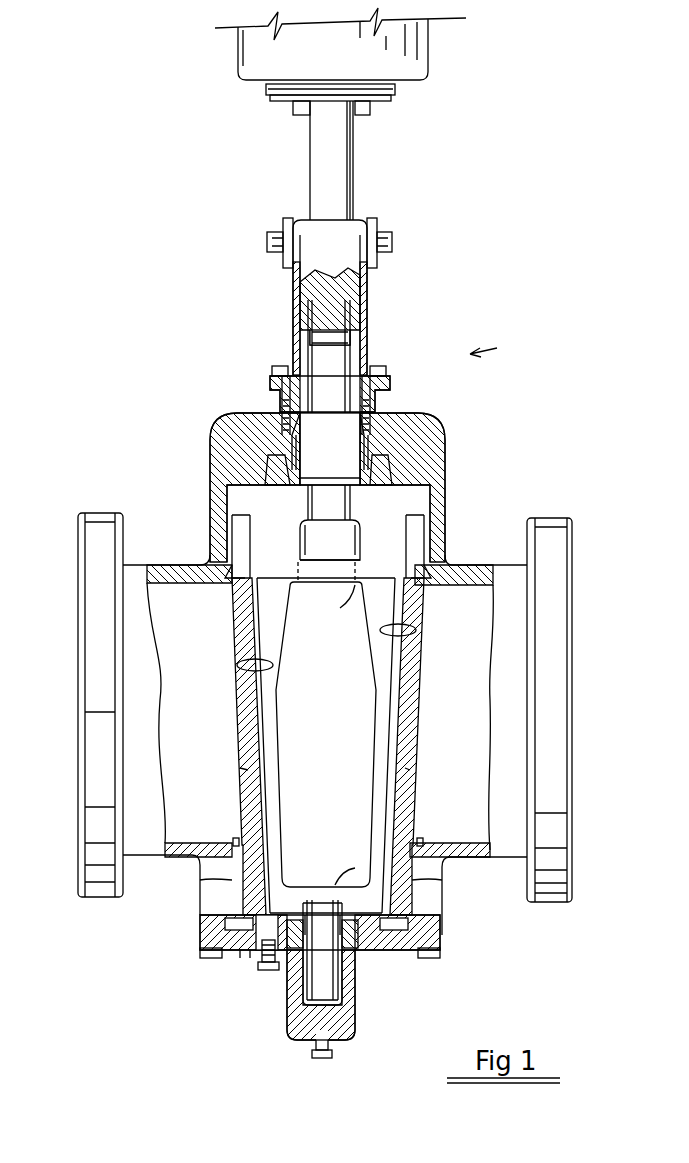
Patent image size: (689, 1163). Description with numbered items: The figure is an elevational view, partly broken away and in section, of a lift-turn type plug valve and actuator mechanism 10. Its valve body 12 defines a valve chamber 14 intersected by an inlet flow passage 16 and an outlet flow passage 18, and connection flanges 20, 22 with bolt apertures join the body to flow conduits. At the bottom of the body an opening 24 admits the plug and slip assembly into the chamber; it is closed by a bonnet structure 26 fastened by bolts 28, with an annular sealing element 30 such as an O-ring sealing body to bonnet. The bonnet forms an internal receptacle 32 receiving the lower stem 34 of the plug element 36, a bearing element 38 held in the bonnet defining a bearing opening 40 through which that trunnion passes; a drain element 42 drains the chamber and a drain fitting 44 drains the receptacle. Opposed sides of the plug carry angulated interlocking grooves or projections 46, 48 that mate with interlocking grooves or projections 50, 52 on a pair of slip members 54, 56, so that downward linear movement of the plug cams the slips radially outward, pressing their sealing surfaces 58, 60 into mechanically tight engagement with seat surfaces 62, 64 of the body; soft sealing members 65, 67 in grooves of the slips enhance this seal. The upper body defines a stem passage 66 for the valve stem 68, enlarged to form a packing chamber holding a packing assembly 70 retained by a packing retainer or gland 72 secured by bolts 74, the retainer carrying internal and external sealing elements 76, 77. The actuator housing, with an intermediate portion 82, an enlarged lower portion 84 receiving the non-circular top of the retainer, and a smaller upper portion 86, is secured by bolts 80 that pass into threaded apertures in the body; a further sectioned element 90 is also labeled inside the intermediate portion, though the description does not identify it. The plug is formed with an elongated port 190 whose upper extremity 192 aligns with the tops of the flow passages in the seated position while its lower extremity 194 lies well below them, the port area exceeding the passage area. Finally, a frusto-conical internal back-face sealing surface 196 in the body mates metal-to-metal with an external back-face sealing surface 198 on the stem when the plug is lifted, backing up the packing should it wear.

The lift-turn type plug valve and actuator mechanism 10 is at (496, 347).
The valve body 12 is at (222, 452).
The valve chamber 14 is at (228, 516).
The inlet flow passage 16 is at (160, 598).
The outlet flow passage 18 is at (470, 595).
The connection flange 20 is at (95, 815).
The connection flange 22 is at (548, 780).
The body opening 24 is at (438, 948).
The bonnet structure 26 is at (240, 958).
The bolts 28 is at (215, 955).
The annular sealing element 30 is at (197, 933).
The internal receptacle 32 is at (350, 1010).
The lower stem 34 is at (340, 990).
The plug element 36 is at (378, 660).
The bearing element 38 is at (355, 945).
The internal bearing opening 40 is at (298, 975).
The drain element 42 is at (262, 968).
The drain fitting 44 is at (323, 1058).
The interlocking groove or projection 46 is at (258, 713).
The interlocking groove or projection 48 is at (400, 715).
The interlocking groove or projection 50 is at (240, 665).
The interlocking groove or projection 52 is at (413, 630).
The slip member 54 is at (250, 770).
The slip member 56 is at (405, 770).
The sealing surface 58 is at (208, 882).
The sealing surface 60 is at (444, 880).
The seat surface 62 is at (240, 565).
The seat surface 64 is at (415, 565).
The soft sealing member 65 is at (235, 840).
The stem passage 66 is at (340, 497).
The soft sealing member 67 is at (420, 840).
The valve stem 68 is at (440, 445).
The packing assembly 70 is at (395, 473).
The packing retainer 72 is at (285, 430).
The bolts 74 is at (392, 385).
The sealing element 76 is at (283, 393).
The sealing element 77 is at (385, 430).
The bolts 80 is at (380, 368).
The intermediate portion 82 is at (300, 280).
The enlarged lower portion 84 is at (272, 380).
The smaller upper portion 86 is at (318, 182).
The coupling 90 is at (340, 298).
The elongated port 190 is at (327, 706).
The upper extremity of the port 192 is at (350, 590).
The lower extremity of the port 194 is at (342, 880).
The internal back-face sealing surface 196 is at (302, 490).
The external back-face sealing surface 198 is at (300, 522).